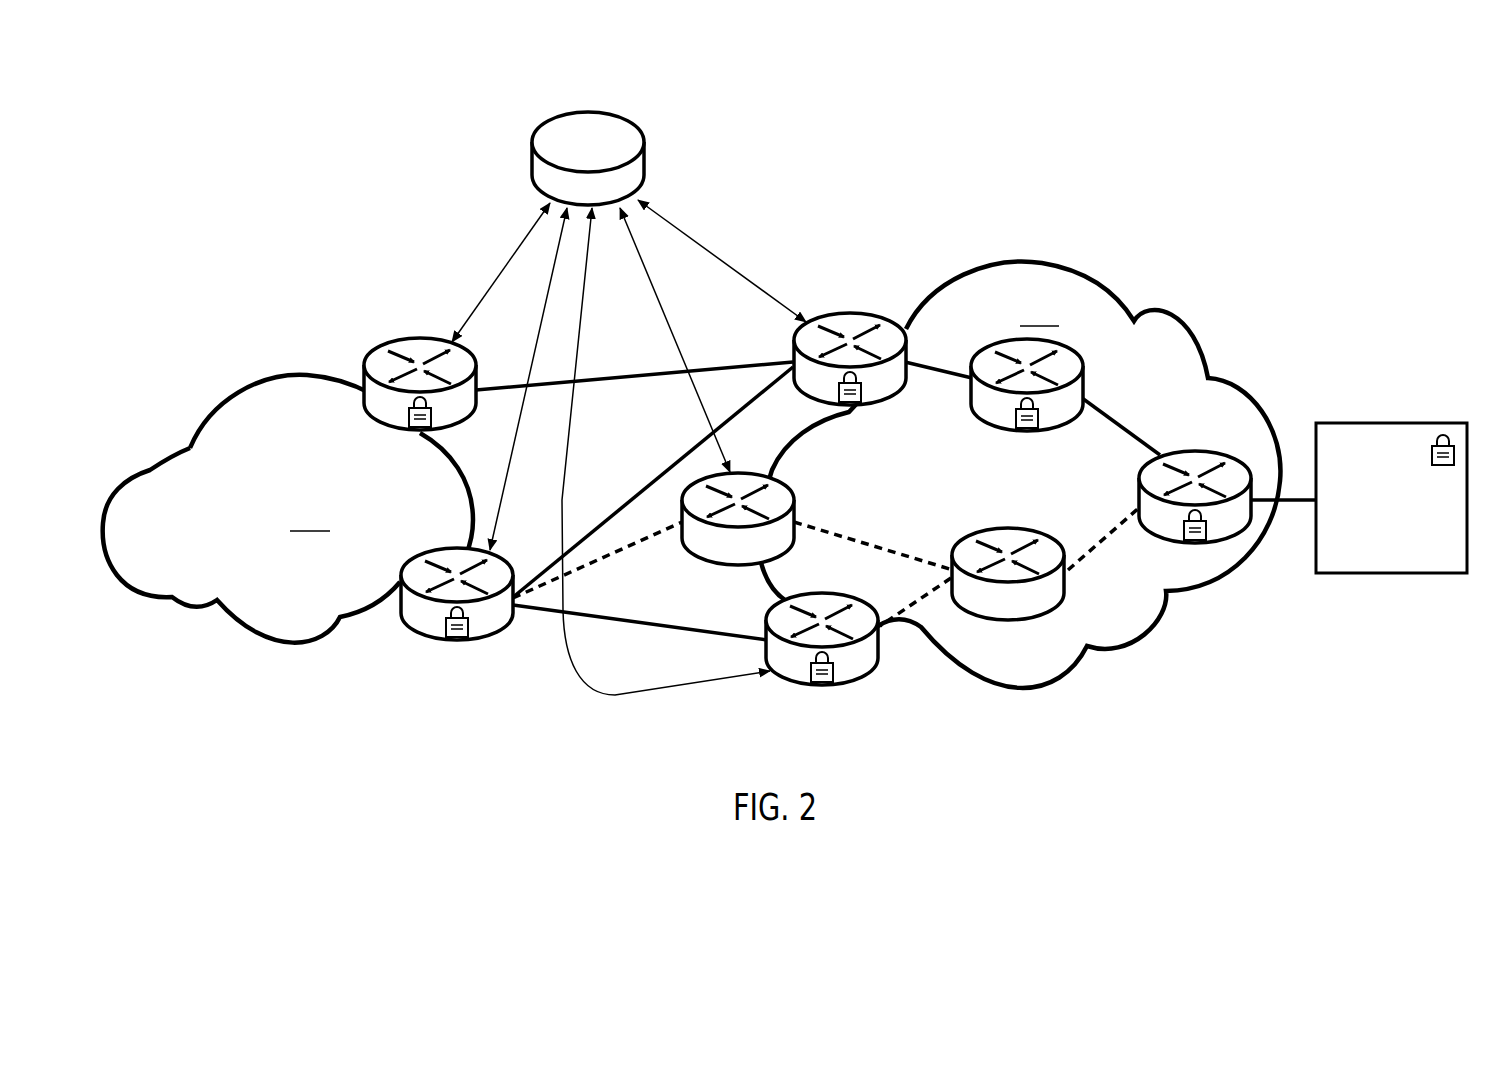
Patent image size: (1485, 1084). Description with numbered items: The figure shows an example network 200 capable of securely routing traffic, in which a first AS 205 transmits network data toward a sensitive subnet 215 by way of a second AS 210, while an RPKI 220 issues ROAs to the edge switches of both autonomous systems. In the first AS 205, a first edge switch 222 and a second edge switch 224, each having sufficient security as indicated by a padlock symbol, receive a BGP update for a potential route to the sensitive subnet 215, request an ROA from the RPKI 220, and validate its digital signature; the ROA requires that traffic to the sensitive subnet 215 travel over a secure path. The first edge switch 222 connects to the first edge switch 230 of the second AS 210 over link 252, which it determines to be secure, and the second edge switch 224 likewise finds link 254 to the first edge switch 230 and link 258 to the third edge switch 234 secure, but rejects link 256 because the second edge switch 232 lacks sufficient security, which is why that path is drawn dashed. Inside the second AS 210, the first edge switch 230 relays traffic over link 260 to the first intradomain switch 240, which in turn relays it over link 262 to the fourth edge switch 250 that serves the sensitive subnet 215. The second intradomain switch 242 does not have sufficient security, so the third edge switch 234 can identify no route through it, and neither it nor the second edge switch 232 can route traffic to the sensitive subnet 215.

The network 200 is at (250, 106).
The first AS 205 is at (290, 643).
The second AS 210 is at (1018, 475).
The sensitive subnet 215 is at (1372, 542).
The RPKI 220 is at (531, 164).
The first edge switch 222 is at (363, 354).
The second edge switch 224 is at (470, 641).
The first edge switch 230 is at (858, 406).
The second edge switch 232 is at (733, 563).
The third edge switch 234 is at (806, 686).
The first intradomain switch 240 is at (998, 433).
The second intradomain switch 242 is at (1007, 621).
The fourth edge switch 250 is at (1183, 544).
The link 252 is at (593, 386).
The link 254 is at (745, 410).
The link 256 is at (627, 551).
The link 258 is at (615, 623).
The link 260 is at (930, 373).
The link 262 is at (1112, 428).